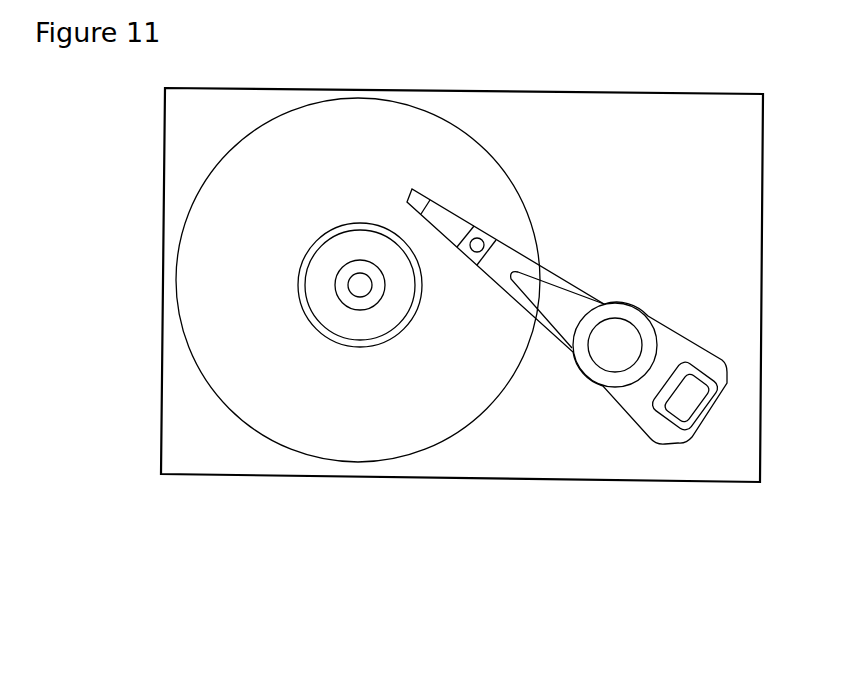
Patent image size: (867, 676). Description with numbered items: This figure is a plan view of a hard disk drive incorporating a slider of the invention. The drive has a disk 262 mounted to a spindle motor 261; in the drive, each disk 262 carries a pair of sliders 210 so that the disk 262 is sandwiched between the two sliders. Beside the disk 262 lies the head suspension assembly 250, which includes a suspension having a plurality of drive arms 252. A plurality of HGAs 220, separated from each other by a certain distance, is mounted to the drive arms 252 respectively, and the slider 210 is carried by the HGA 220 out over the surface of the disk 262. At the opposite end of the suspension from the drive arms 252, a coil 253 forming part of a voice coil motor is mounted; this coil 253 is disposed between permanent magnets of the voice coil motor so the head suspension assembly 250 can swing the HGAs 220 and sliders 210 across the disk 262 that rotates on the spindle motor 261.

The slider 210 is at (426, 197).
The HGA 220 is at (455, 243).
The head suspension assembly 250 is at (613, 398).
The drive arm 252 is at (560, 340).
The coil 253 is at (712, 410).
The spindle motor 261 is at (626, 302).
The disk 262 is at (292, 452).